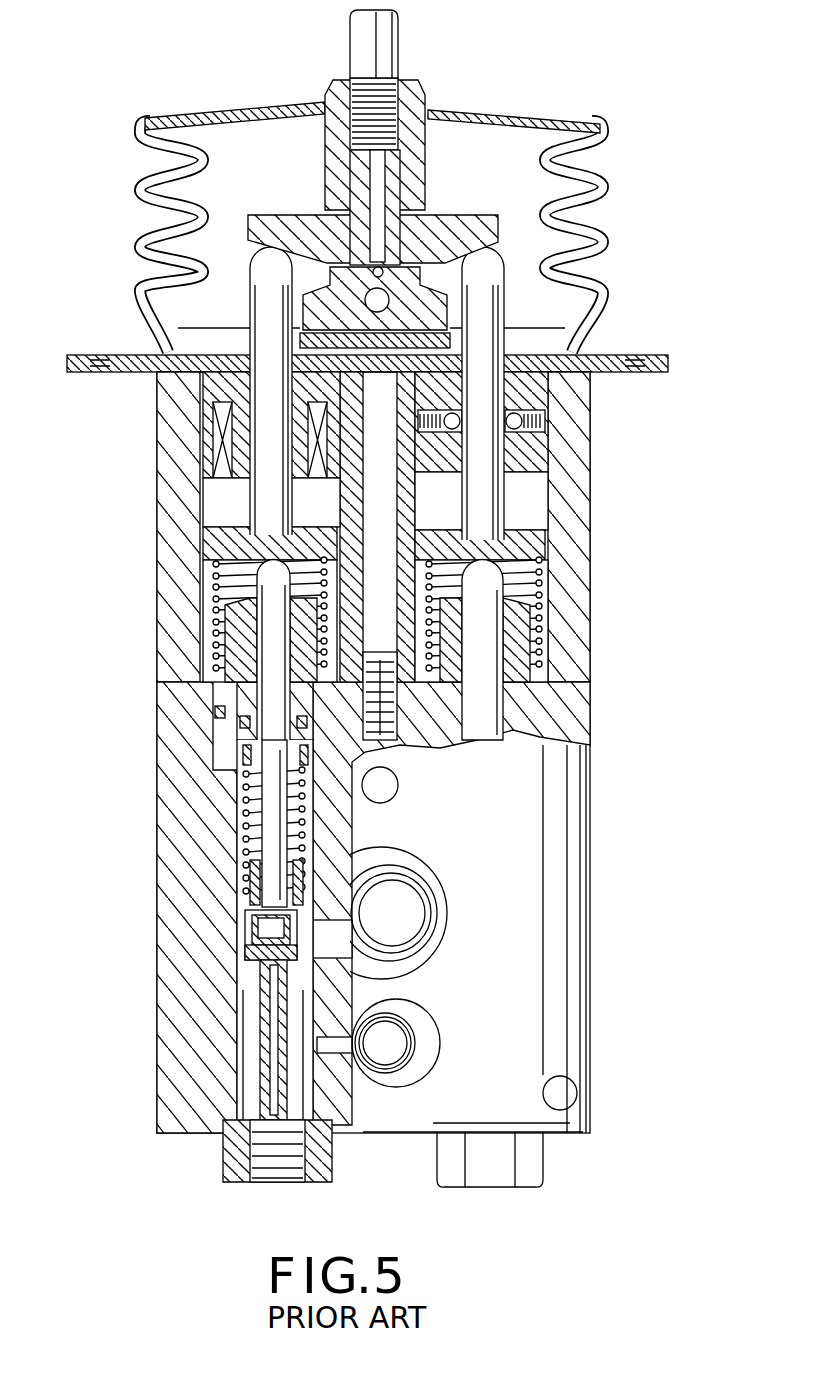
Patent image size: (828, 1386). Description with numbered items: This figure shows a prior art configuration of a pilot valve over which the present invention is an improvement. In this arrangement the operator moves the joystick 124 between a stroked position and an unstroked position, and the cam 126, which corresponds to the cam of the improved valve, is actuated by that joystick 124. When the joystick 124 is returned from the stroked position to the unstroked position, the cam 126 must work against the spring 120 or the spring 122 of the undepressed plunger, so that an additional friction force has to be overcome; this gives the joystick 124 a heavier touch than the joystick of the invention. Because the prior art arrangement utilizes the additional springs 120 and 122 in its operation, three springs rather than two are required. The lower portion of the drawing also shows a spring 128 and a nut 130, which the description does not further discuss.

The spring 120 is at (532, 583).
The spring 122 is at (213, 590).
The joystick 124 is at (343, 47).
The cam 126 is at (448, 233).
The spring 128 is at (243, 815).
The nut 130 is at (247, 937).